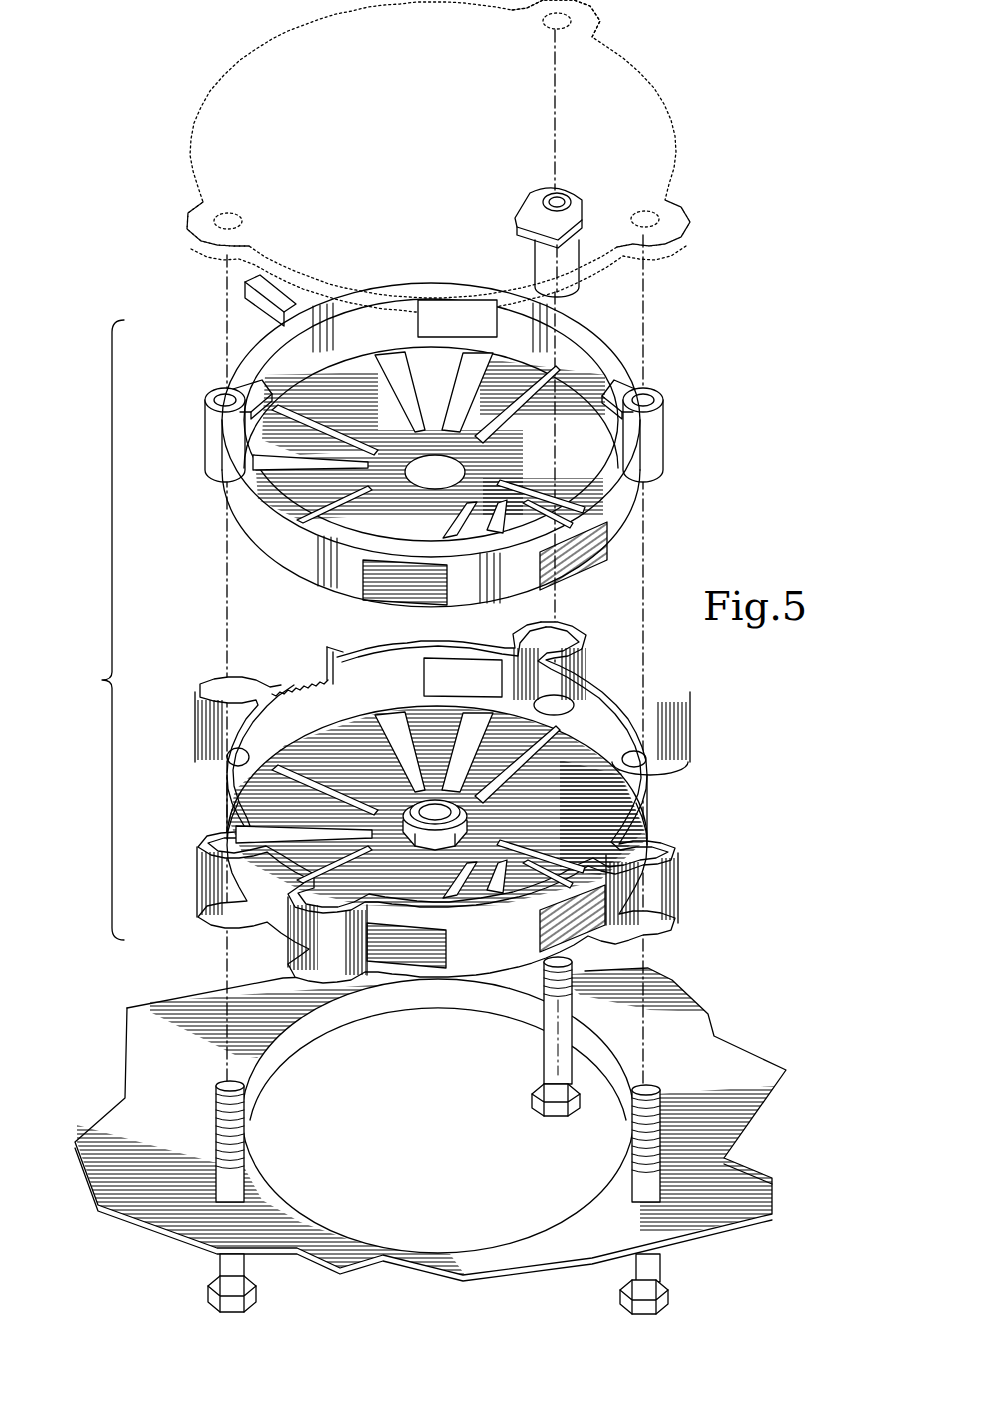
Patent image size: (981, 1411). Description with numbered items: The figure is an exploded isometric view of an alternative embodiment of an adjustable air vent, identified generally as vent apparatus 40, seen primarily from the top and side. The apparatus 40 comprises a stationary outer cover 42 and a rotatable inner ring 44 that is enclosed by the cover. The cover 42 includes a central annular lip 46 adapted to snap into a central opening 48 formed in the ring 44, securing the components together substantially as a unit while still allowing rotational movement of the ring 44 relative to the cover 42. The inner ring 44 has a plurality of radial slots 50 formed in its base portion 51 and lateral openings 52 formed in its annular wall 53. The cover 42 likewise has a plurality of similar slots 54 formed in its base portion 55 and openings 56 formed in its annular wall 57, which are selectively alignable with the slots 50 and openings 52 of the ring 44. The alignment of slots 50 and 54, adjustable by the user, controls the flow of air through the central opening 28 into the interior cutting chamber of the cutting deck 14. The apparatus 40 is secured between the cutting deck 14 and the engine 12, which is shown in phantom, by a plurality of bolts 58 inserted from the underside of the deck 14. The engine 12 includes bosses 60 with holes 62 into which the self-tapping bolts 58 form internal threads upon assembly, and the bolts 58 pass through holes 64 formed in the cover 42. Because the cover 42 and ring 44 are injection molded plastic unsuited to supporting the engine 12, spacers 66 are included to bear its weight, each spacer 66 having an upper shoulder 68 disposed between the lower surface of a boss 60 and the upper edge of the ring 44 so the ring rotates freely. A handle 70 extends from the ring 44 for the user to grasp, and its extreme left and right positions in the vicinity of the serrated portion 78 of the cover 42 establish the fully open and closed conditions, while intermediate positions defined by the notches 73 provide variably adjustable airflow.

The engine 12 is at (443, 156).
The cutting deck 14 is at (430, 1144).
The central opening 28 is at (542, 1228).
The adjustable air vent apparatus 40 is at (92, 630).
The stationary outer cover 42 is at (447, 793).
The rotatable inner ring 44 is at (443, 446).
The central annular lip 46 is at (476, 807).
The central opening 48 is at (473, 433).
The radial slots 50 is at (527, 397).
The base portion 51 is at (560, 472).
The lateral openings 52 is at (487, 323).
The annular wall 53 is at (617, 508).
The slots 54 is at (543, 737).
The base portion 55 is at (616, 802).
The openings 56 is at (450, 672).
The annular wall 57 is at (655, 809).
The bolts 58 is at (534, 1098).
The bosses 60 is at (600, 10).
The holes 62 is at (549, 30).
The holes 64 is at (583, 654).
The spacers 66 is at (582, 237).
The upper shoulder 68 is at (515, 218).
The handle 70 is at (243, 290).
The notches 73 is at (327, 647).
The serrated portion 78 is at (305, 694).